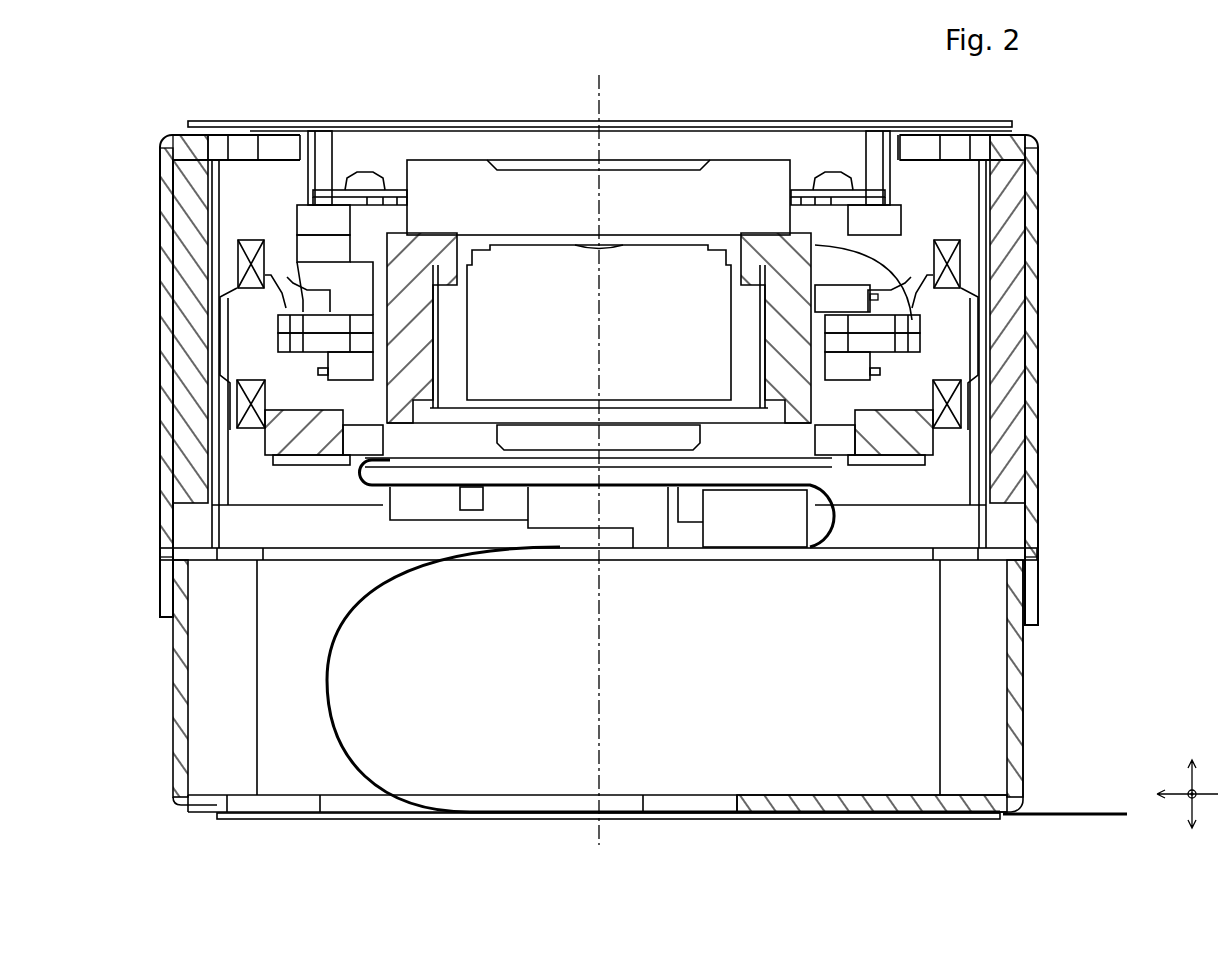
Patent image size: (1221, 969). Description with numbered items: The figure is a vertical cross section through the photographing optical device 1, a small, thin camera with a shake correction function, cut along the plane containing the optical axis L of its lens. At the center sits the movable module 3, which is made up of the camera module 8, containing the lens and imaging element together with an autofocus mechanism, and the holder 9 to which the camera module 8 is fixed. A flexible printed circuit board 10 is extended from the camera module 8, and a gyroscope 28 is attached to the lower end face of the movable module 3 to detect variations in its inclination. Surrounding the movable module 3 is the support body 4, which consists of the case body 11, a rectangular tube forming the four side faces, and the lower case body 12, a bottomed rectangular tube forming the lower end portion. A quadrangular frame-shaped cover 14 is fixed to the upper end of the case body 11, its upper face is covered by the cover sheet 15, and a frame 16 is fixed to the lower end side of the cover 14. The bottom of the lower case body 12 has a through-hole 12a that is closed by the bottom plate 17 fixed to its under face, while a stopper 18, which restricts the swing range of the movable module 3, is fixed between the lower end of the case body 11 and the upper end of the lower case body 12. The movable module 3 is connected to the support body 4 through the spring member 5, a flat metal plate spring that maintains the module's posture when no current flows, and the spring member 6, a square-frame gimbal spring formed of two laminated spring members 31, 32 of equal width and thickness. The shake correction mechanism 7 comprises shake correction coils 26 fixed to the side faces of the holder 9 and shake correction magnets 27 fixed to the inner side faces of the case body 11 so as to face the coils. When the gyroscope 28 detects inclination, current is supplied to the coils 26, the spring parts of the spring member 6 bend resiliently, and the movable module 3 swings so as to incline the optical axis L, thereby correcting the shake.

The photographing optical device 1 is at (1122, 119).
The movable module 3 is at (598, 270).
The camera module 8 is at (743, 160).
The support body 4 is at (637, 380).
The case body 11 is at (1042, 196).
The spring member 5 is at (392, 191).
The spring member 6 is at (108, 342).
The spring member 31 is at (278, 325).
The spring member 32 is at (278, 343).
The shake correction mechanism 7 is at (1083, 226).
The holder 9 is at (990, 353).
The flexible printed circuit board 10 is at (1084, 811).
The lower case body 12 is at (1025, 680).
The through-hole 12a is at (733, 800).
The cover 14 is at (283, 120).
The cover sheet 15 is at (238, 121).
The frame 16 is at (293, 222).
The bottom plate 17 is at (272, 820).
The stopper 18 is at (1037, 558).
The shake correction coil 26 is at (237, 262).
The shake correction magnet 27 is at (173, 235).
The gyroscope 28 is at (635, 549).
The optical axis L is at (604, 101).